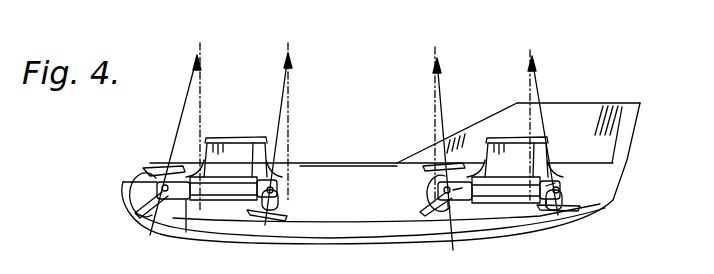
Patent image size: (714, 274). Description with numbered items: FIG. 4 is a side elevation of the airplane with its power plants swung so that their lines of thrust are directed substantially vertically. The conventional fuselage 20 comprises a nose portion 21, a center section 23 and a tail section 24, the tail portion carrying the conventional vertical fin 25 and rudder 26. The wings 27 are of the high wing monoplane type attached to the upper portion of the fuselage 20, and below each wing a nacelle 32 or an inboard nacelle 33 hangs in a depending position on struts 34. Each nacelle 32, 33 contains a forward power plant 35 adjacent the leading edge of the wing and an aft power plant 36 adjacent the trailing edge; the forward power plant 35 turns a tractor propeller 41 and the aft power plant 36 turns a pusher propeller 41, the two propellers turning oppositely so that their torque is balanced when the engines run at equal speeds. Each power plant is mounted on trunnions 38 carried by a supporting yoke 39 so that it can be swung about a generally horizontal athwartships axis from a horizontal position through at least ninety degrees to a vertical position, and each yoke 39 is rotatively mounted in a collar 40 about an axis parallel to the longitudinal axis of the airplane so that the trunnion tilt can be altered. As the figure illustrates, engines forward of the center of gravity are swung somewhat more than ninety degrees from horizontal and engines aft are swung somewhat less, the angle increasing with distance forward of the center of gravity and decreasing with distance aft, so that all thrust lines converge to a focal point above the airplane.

The fuselage 20 is at (242, 244).
The nose portion 21 is at (122, 198).
The center section 23 is at (353, 185).
The tail section 24 is at (610, 187).
The vertical fin 25 is at (586, 112).
The rudder 26 is at (630, 128).
The wings 27 is at (218, 145).
The nacelle 32 is at (214, 200).
The inboard nacelle 33 is at (224, 183).
The struts 34 is at (237, 152).
The forward power plant 35 is at (152, 199).
The aft power plant 36 is at (281, 201).
The trunnions 38 is at (160, 186).
The supporting yoke 39 is at (188, 232).
The collars 40 is at (458, 195).
The propeller 41 is at (152, 166).